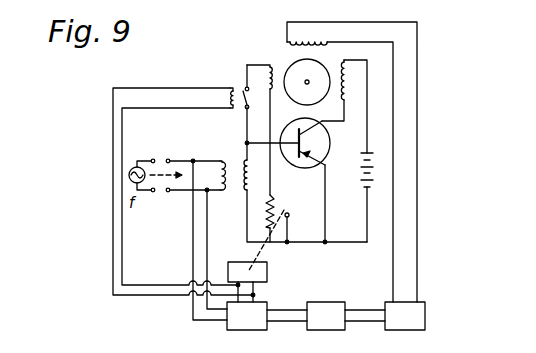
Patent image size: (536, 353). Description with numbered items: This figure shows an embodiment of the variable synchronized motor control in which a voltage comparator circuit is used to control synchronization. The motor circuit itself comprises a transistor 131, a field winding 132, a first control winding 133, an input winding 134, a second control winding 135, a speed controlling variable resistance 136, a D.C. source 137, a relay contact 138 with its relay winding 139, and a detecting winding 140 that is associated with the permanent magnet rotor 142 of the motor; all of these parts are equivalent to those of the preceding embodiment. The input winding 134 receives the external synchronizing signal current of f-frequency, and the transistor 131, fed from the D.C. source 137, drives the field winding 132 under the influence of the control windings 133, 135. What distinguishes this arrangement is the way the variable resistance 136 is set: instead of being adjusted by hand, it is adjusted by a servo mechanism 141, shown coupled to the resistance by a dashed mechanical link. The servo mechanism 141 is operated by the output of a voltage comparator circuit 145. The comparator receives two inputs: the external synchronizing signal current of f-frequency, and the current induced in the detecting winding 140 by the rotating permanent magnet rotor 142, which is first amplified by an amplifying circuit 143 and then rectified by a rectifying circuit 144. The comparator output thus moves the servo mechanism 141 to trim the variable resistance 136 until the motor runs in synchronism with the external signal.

The transistor 131 is at (288, 156).
The field winding 132 is at (346, 100).
The first control winding 133 is at (243, 186).
The input winding 134 is at (225, 153).
The second control winding 135 is at (270, 65).
The speed controlling variable resistance 136 is at (274, 199).
The D.C. source 137 is at (363, 177).
The relay contact 138 is at (243, 90).
The relay winding 139 is at (230, 102).
The detecting winding 140 is at (321, 41).
The servo mechanism 141 is at (267, 271).
The permanent magnet rotor 142 is at (289, 71).
The amplifying circuit 143 is at (413, 327).
The rectifying circuit 144 is at (330, 325).
The voltage comparator circuit 145 is at (243, 323).